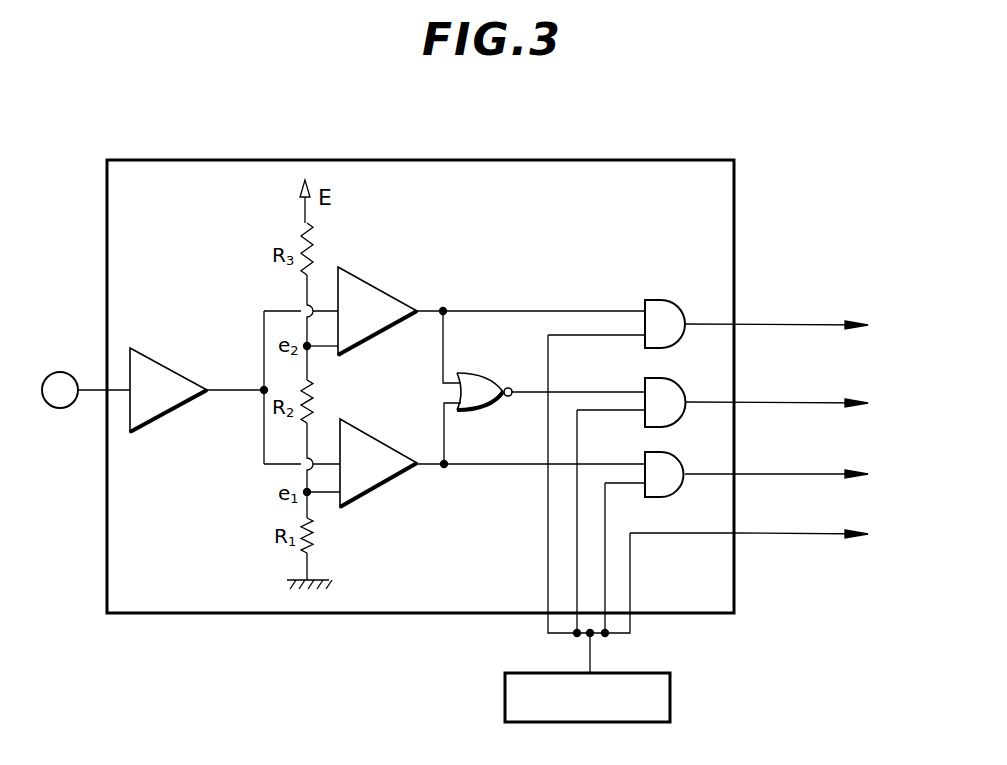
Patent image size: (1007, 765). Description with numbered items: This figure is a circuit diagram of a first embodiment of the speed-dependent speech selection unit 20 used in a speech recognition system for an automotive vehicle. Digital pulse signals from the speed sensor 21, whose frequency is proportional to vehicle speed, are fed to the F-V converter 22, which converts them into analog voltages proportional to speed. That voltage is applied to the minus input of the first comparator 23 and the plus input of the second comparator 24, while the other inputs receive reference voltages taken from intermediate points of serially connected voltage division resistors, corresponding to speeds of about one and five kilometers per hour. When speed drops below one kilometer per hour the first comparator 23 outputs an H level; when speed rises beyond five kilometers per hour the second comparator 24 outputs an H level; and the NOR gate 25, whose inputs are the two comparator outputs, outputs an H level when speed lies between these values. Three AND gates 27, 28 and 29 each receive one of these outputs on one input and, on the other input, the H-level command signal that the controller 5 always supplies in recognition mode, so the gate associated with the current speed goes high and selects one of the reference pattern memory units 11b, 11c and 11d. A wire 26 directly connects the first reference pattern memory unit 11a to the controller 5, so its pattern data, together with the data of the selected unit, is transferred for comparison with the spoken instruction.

The speech selection unit 20 is at (202, 172).
The speed sensor 21 is at (70, 342).
The frequency-voltage converter 22 is at (170, 368).
The first comparator 23 is at (393, 421).
The second comparator 24 is at (388, 290).
The NOR gate 25 is at (477, 373).
The wire 26 is at (677, 533).
The first AND gate 27 is at (672, 452).
The second AND gate 28 is at (670, 377).
The third AND gate 29 is at (687, 277).
The first reference pattern memory unit 11a is at (842, 527).
The reference pattern memory unit 11b is at (835, 465).
The reference pattern memory unit 11c is at (833, 401).
The reference pattern memory unit 11d is at (833, 320).
The controller 5 is at (671, 695).